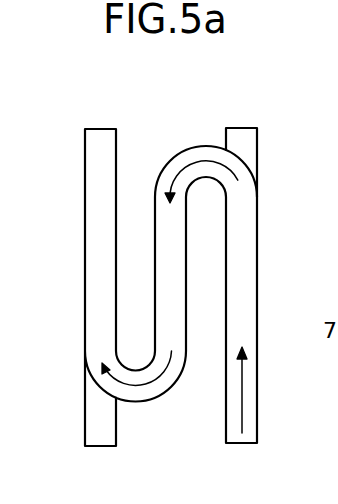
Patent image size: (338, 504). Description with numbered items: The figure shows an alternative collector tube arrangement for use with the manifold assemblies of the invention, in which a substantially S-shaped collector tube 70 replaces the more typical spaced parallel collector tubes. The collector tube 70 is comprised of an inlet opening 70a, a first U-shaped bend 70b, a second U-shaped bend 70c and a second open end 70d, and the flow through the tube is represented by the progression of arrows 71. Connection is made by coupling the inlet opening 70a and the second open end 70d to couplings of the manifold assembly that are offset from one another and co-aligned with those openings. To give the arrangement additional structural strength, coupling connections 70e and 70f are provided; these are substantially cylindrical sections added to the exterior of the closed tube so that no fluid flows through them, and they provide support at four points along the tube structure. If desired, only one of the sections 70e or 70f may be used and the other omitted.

The S-shaped collector tube 70 is at (78, 241).
The inlet opening 70a is at (90, 128).
The first U-shaped bend 70b is at (157, 398).
The second U-shaped bend 70c is at (192, 145).
The second open end 70d is at (247, 445).
The coupling connection 70e is at (242, 128).
The coupling connection 70f is at (90, 447).
The arrows 71 is at (222, 164).